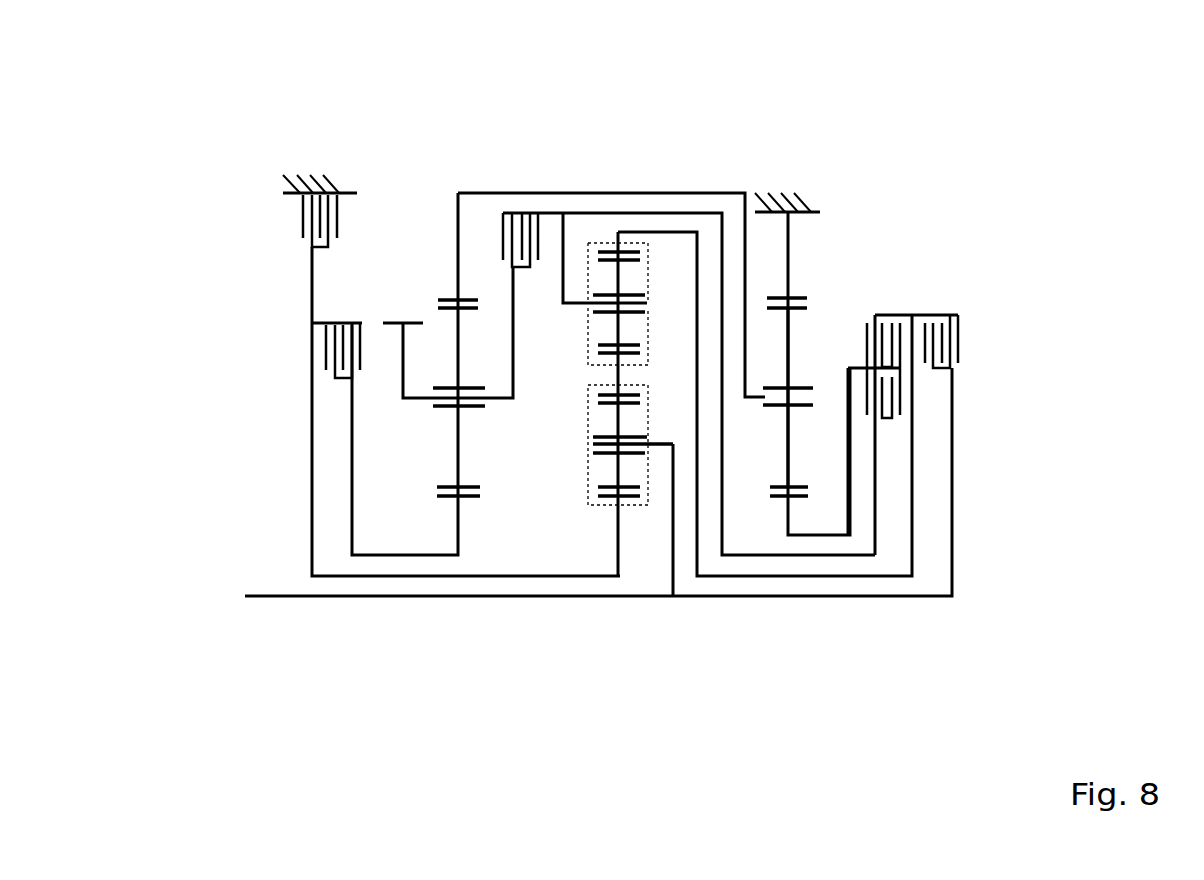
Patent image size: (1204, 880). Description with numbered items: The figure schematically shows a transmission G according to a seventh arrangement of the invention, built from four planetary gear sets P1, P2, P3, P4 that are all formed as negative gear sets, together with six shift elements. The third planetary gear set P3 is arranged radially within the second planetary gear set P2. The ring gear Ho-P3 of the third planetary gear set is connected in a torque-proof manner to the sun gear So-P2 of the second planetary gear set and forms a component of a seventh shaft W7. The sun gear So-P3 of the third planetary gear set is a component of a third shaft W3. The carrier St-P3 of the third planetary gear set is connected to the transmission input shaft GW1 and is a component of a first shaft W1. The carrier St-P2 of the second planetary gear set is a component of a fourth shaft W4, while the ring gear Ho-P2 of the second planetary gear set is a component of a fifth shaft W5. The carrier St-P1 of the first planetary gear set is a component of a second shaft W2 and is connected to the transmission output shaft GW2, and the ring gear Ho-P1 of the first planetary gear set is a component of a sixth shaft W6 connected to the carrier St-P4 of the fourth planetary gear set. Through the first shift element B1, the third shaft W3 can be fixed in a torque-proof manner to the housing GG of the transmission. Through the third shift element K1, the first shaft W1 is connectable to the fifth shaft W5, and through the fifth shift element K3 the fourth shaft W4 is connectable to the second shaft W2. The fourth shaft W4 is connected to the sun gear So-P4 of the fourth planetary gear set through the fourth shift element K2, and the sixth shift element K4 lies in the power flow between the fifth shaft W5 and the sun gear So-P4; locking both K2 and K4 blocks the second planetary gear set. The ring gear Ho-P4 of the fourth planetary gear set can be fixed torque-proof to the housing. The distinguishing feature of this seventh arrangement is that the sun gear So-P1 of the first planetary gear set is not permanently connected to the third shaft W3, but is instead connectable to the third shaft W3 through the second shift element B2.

The first shift element B1 is at (284, 209).
The second shift element B2 is at (326, 314).
The third shift element K1 is at (975, 336).
The fourth shift element K2 is at (922, 393).
The fifth shift element K3 is at (482, 227).
The sixth shift element K4 is at (906, 299).
The transmission G is at (812, 145).
The housing GG is at (790, 195).
The transmission input shaft GW1 is at (282, 600).
The transmission output shaft GW2 is at (403, 323).
The first shaft W1 is at (953, 535).
The second shaft W2 is at (400, 378).
The third shaft W3 is at (312, 530).
The fourth shaft W4 is at (560, 212).
The fifth shaft W5 is at (913, 475).
The sixth shaft W6 is at (724, 205).
The seventh shaft W7 is at (617, 365).
The first planetary gear set P1 is at (458, 182).
The second planetary gear set P2 is at (595, 234).
The third planetary gear set P3 is at (597, 518).
The fourth planetary gear set P4 is at (788, 612).
The ring gear of the first planetary gear set Ho-P1 is at (453, 300).
The ring gear of the second planetary gear set Ho-P2 is at (632, 248).
The ring gear of the third planetary gear set Ho-P3 is at (640, 393).
The ring gear of the fourth planetary gear set Ho-P4 is at (800, 298).
The carrier of the first planetary gear set St-P1 is at (422, 398).
The carrier of the second planetary gear set St-P2 is at (573, 297).
The carrier of the third planetary gear set St-P3 is at (660, 446).
The carrier of the fourth planetary gear set St-P4 is at (755, 402).
The sun gear of the first planetary gear set So-P1 is at (450, 497).
The sun gear of the second planetary gear set So-P2 is at (602, 357).
The sun gear of the third planetary gear set So-P3 is at (632, 500).
The sun gear of the fourth planetary gear set So-P4 is at (800, 497).